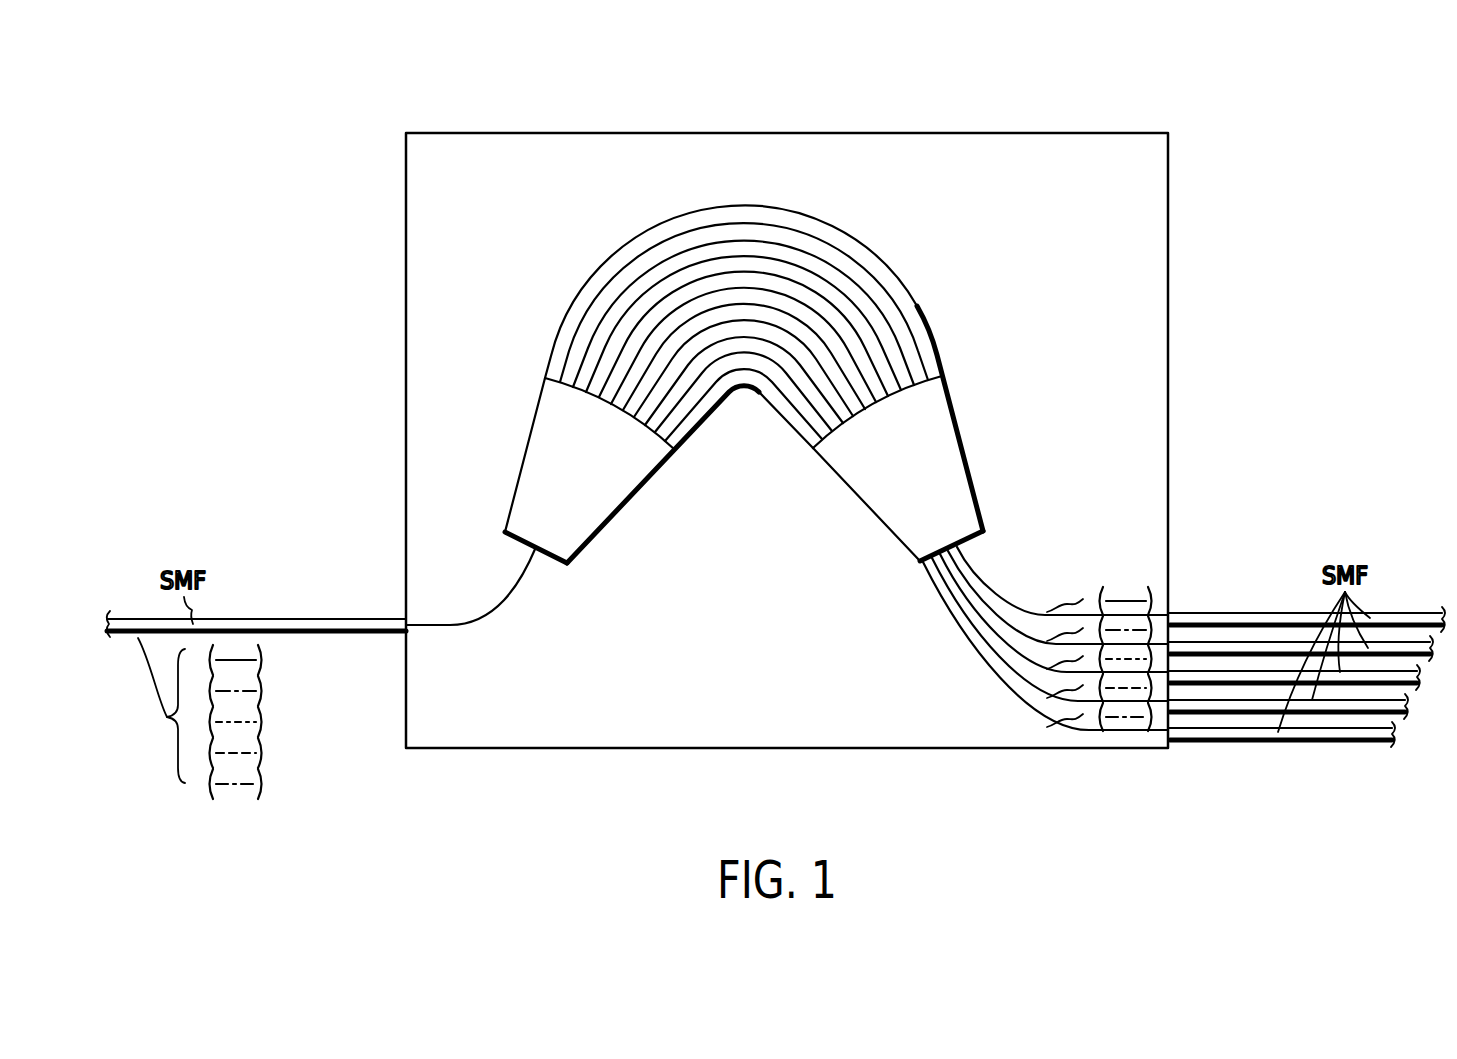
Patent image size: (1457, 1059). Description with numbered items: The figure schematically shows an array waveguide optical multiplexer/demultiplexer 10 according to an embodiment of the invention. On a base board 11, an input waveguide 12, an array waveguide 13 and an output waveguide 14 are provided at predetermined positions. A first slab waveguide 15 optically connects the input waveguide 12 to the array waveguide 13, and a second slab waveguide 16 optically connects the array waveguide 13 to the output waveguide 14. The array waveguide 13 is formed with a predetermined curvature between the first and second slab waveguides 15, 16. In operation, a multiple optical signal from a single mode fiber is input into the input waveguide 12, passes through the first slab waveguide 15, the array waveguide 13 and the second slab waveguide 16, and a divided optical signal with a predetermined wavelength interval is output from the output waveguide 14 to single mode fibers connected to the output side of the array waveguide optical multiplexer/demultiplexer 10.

The array waveguide optical multiplexer/demultiplexer 10 is at (788, 450).
The base board 11 is at (889, 742).
The input waveguide 12 is at (502, 583).
The array waveguide 13 is at (680, 200).
The output waveguide 14 is at (1027, 715).
The first slab waveguide 15 is at (506, 467).
The second slab waveguide 16 is at (970, 437).